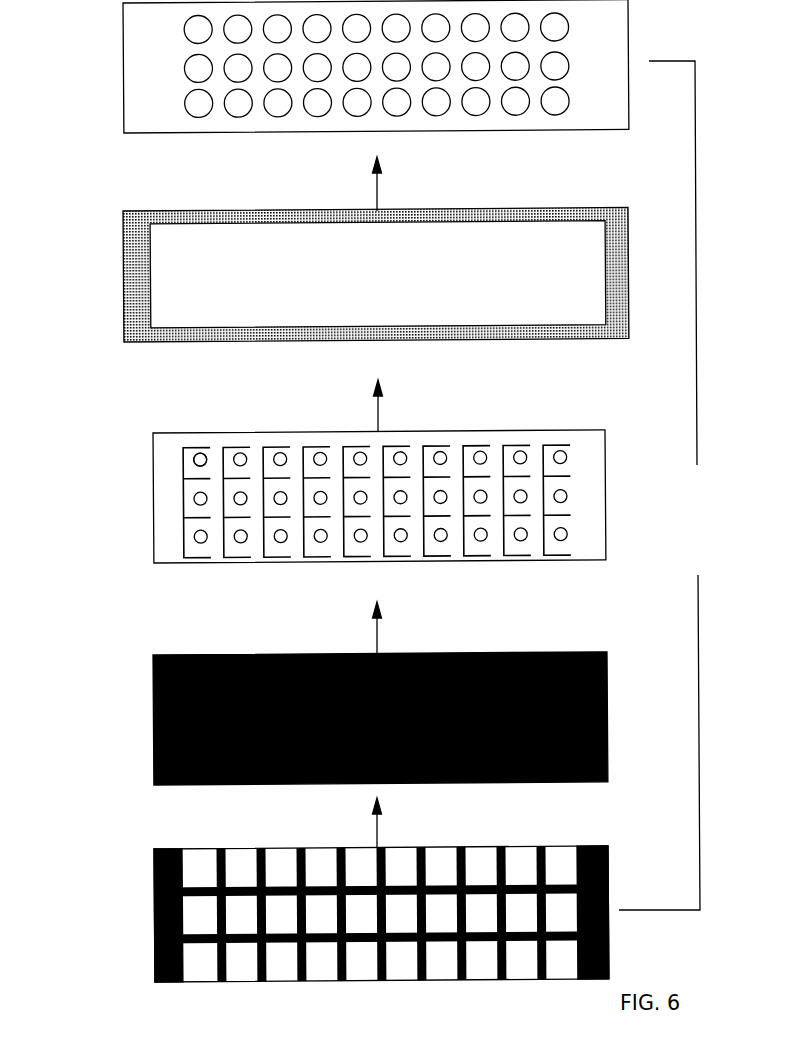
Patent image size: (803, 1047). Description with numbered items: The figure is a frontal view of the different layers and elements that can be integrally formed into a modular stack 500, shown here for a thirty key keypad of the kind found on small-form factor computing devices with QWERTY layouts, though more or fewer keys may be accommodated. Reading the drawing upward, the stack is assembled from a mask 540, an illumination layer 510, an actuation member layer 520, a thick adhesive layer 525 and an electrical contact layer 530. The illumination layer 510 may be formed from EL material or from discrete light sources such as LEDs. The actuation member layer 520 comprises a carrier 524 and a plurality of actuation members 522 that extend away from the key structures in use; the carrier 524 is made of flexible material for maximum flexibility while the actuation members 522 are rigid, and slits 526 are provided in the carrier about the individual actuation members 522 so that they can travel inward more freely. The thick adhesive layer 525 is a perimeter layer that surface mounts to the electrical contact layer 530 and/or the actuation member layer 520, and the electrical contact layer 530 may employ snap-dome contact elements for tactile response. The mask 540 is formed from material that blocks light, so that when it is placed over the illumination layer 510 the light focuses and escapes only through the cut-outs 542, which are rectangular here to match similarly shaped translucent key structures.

The modular stack 500 is at (664, 485).
The illumination layer 510 is at (152, 680).
The actuation member layer 520 is at (327, 488).
The actuation member 522 is at (204, 457).
The carrier 524 is at (258, 447).
The thick adhesive layer 525 is at (122, 252).
The slits 526 is at (183, 520).
The electrical contact layer 530 is at (122, 43).
The mask layer 540 is at (330, 914).
The cut-outs 542 is at (168, 940).